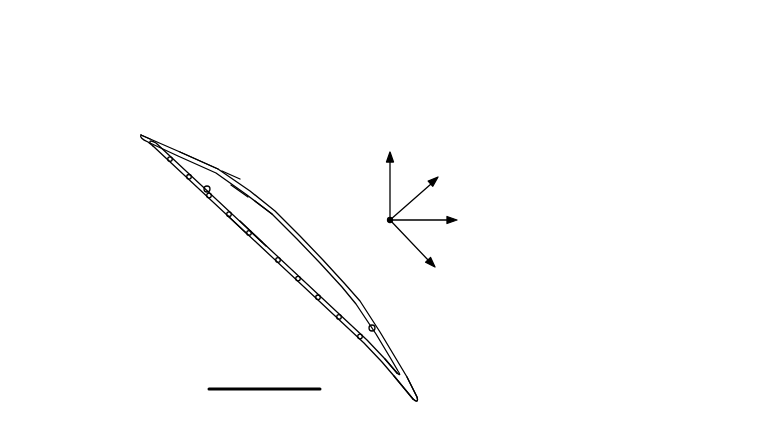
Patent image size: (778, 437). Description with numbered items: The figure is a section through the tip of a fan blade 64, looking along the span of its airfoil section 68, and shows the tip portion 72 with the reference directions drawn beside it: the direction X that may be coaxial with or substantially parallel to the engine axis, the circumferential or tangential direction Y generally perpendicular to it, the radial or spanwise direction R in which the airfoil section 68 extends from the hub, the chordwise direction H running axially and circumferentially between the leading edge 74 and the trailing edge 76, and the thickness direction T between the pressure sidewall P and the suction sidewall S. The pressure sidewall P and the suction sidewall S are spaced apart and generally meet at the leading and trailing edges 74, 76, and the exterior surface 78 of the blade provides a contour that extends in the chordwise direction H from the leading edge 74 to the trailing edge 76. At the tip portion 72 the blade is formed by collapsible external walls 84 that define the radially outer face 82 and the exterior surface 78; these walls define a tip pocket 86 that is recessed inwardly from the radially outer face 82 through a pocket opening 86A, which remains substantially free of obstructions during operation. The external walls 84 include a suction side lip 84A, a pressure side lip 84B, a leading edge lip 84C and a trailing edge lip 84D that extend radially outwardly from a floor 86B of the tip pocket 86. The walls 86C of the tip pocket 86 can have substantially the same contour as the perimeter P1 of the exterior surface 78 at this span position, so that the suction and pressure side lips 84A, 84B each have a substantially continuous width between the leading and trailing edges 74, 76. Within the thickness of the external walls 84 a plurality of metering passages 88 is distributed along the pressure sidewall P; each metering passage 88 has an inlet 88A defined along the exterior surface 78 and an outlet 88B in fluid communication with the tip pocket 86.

The fan blade 64 is at (191, 93).
The airfoil section 68 is at (166, 181).
The tip portion 72 is at (196, 160).
The leading edge 74 is at (114, 111).
The trailing edge 76 is at (469, 392).
The exterior surface 78 is at (263, 204).
The radially outer face 82 is at (146, 138).
The external walls 84 is at (304, 215).
The suction side lip 84A is at (296, 234).
The pressure side lip 84B is at (270, 250).
The leading edge lip 84C is at (149, 137).
The trailing edge lip 84D is at (419, 399).
The tip pocket 86 is at (356, 305).
The pocket opening 86A is at (375, 328).
The floor 86B is at (387, 359).
The walls of the tip pocket 86C is at (204, 188).
The metering passage 88 is at (255, 235).
The inlet 88A is at (245, 227).
The outlet 88B is at (258, 240).
The pressure sidewall P is at (237, 218).
The suction sidewall S is at (240, 195).
The perimeter P1 is at (237, 165).
The direction X is at (433, 218).
The circumferential or tangential direction Y is at (391, 176).
The thickness direction T is at (417, 188).
The radial or spanwise direction R is at (390, 222).
The chordwise direction H is at (420, 251).